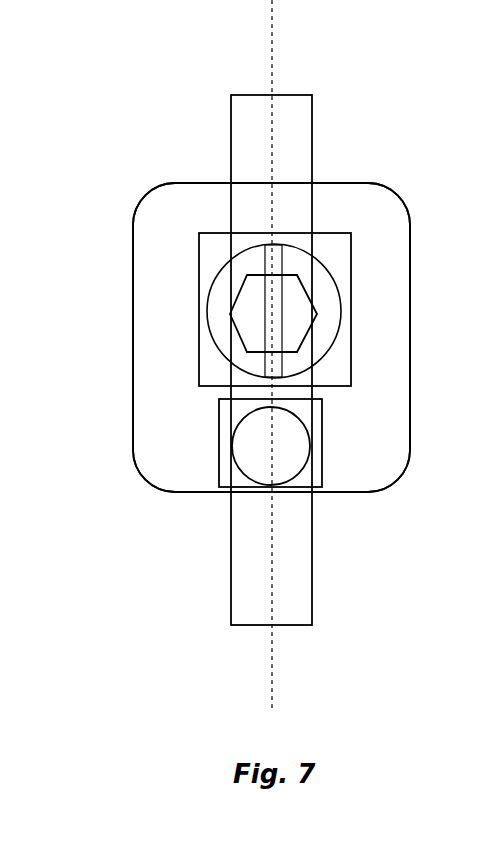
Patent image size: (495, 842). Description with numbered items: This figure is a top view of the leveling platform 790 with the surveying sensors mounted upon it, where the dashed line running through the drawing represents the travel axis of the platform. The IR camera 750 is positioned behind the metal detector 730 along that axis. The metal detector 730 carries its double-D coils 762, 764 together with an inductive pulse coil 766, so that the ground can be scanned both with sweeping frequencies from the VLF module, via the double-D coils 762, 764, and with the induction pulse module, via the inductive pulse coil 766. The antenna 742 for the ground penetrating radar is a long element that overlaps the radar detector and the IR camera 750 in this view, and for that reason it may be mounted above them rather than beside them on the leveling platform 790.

The antenna 742 is at (248, 128).
The metal detector 730 is at (333, 233).
The double-D coil 762 is at (231, 270).
The double-D coil 764 is at (338, 283).
The inductive pulse coil 766 is at (300, 335).
The IR camera 750 is at (228, 448).
The leveling platform 790 is at (394, 457).